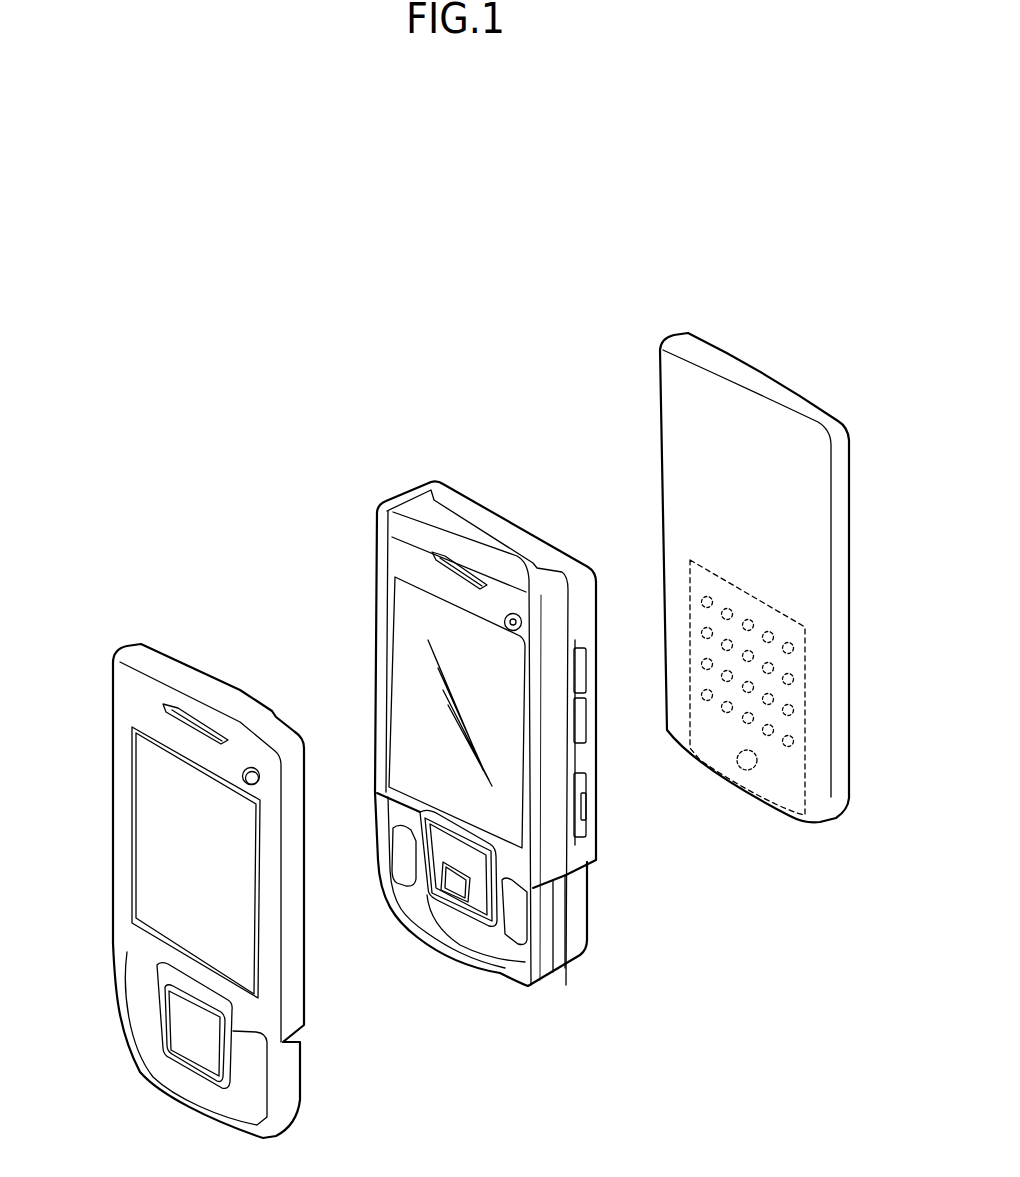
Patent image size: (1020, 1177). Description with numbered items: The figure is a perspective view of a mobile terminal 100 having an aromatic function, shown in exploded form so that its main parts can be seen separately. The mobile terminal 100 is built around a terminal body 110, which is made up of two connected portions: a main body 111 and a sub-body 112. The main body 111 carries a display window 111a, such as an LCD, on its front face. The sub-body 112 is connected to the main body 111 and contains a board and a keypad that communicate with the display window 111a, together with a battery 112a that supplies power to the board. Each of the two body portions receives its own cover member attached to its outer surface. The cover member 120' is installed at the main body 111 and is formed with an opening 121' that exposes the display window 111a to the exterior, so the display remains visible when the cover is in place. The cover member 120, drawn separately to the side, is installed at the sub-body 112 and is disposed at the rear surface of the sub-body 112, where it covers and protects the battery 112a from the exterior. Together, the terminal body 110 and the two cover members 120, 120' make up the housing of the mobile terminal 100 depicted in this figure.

The mobile terminal 100 is at (447, 445).
The terminal body 110 is at (545, 1063).
The main body 111 is at (453, 965).
The display window 111a is at (403, 620).
The sub-body 112 is at (573, 965).
The battery 112a is at (568, 908).
The cover member 120 is at (754, 524).
The cover member 120' is at (208, 821).
The opening 121' is at (145, 862).